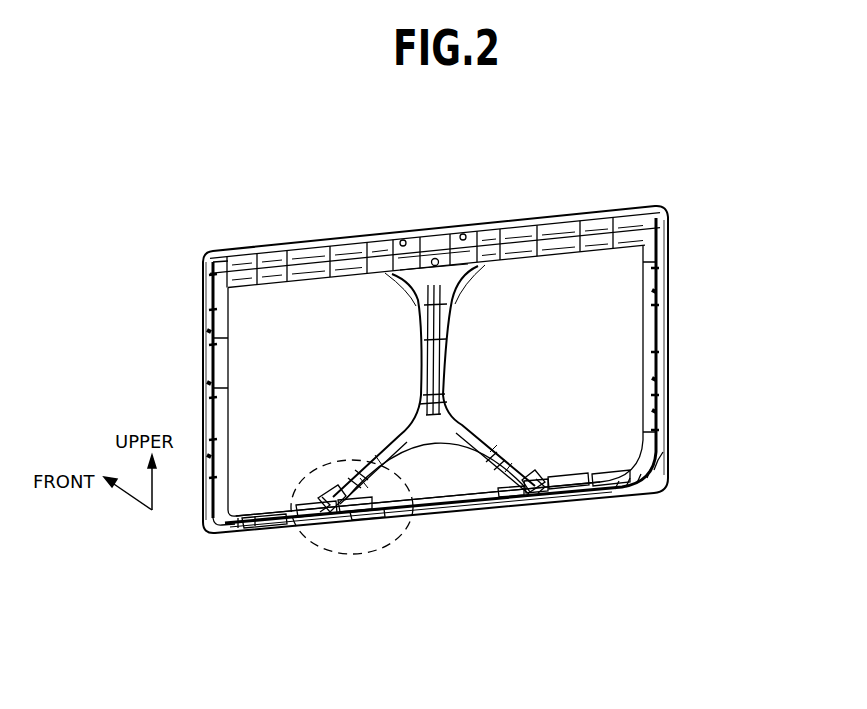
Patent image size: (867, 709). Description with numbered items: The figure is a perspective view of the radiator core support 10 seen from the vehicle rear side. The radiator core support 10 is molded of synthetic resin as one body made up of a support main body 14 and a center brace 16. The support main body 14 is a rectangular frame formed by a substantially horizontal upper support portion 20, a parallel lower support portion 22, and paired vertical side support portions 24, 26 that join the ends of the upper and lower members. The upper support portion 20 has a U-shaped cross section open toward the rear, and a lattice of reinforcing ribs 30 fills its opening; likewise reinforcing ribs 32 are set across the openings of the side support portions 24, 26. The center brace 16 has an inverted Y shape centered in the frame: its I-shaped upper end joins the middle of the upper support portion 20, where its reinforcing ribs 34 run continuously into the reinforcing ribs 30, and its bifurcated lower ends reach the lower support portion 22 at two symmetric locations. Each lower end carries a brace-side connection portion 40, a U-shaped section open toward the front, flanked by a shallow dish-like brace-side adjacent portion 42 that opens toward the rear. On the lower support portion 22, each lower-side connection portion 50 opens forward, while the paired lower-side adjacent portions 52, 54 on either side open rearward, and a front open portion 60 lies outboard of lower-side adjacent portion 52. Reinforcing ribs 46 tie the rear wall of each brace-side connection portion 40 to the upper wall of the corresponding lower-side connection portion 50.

The radiator core support 10 is at (634, 152).
The support main body 14 is at (236, 232).
The center brace 16 is at (460, 348).
The upper support portion 20 is at (410, 229).
The lower support portion 22 is at (435, 493).
The side support portion 24 is at (206, 375).
The side support portion 26 is at (664, 360).
The reinforcing ribs 30 is at (322, 250).
The reinforcing ribs 32 is at (668, 262).
The reinforcing ribs 34 is at (419, 316).
The brace-side connection portion 40 is at (334, 498).
The brace-side adjacent portion 42 is at (350, 468).
The reinforcing rib 46 is at (322, 495).
The lower-side connection portion 50 is at (346, 523).
The lower-side adjacent portion 52 is at (306, 484).
The lower-side adjacent portion 54 is at (372, 521).
The front open portion 60 is at (266, 530).